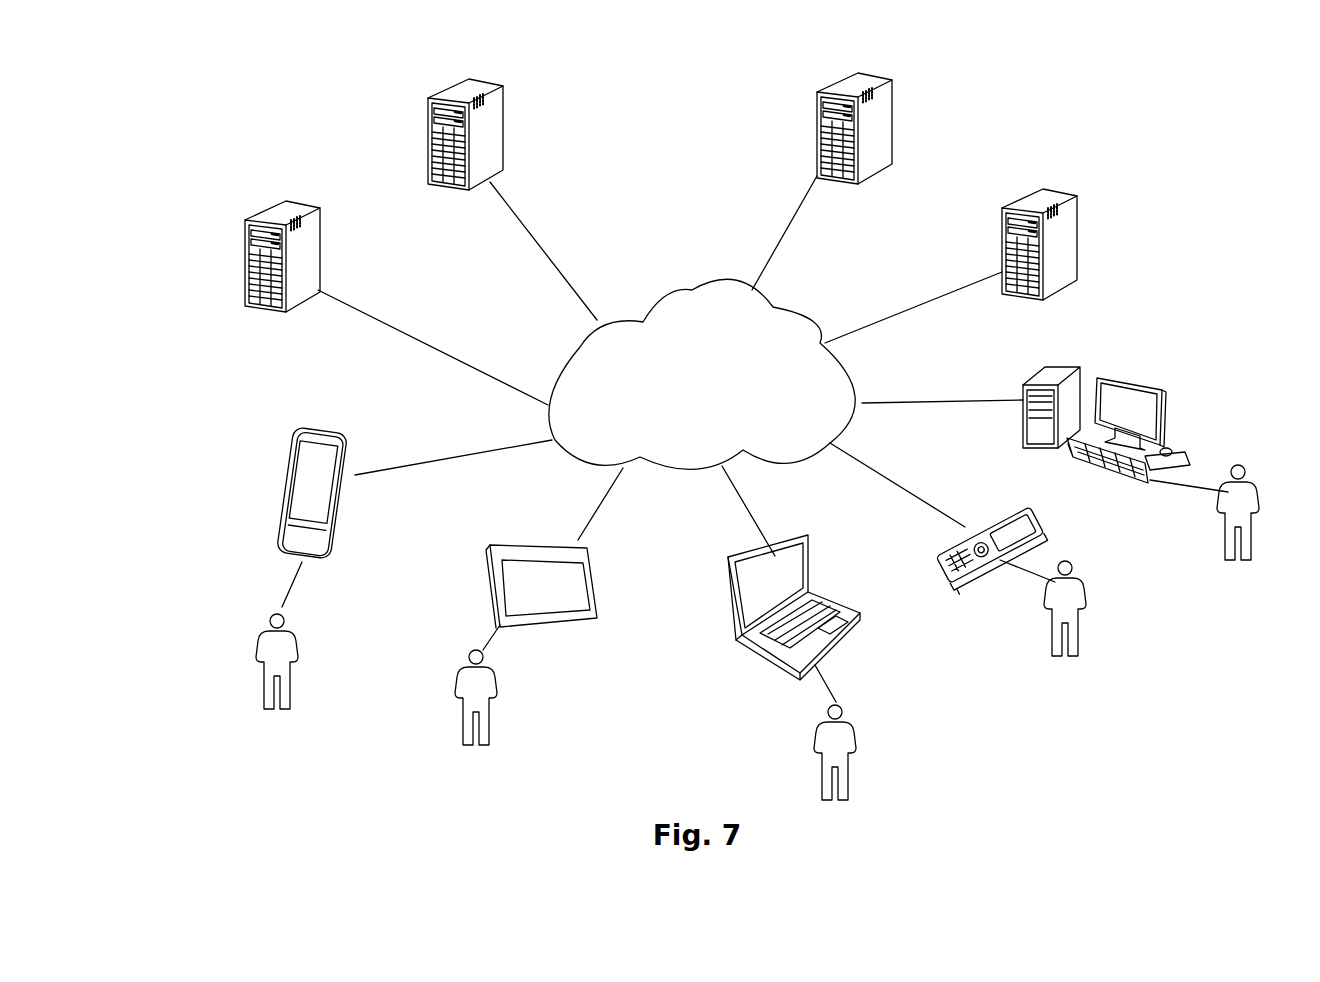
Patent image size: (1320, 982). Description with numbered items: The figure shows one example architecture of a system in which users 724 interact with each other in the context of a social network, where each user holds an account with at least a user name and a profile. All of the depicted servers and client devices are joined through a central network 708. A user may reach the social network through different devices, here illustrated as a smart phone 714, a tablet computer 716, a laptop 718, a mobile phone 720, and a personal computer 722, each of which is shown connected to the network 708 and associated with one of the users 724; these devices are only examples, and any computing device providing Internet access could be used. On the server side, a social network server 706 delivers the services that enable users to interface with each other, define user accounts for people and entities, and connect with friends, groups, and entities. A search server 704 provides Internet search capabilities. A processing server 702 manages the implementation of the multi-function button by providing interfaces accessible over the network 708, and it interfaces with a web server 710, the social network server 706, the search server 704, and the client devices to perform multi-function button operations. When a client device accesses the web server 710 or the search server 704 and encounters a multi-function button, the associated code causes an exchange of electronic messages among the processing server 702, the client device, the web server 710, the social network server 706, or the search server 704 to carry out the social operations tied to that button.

The processing server 702 is at (440, 152).
The search server 704 is at (1068, 243).
The social network server 706 is at (825, 158).
The network 708 is at (655, 308).
The web server 710 is at (250, 290).
The smart phone 714 is at (298, 467).
The tablet computer 716 is at (516, 586).
The laptop 718 is at (792, 566).
The mobile phone 720 is at (1010, 522).
The personal computer 722 is at (1150, 412).
The users 724 is at (258, 648).